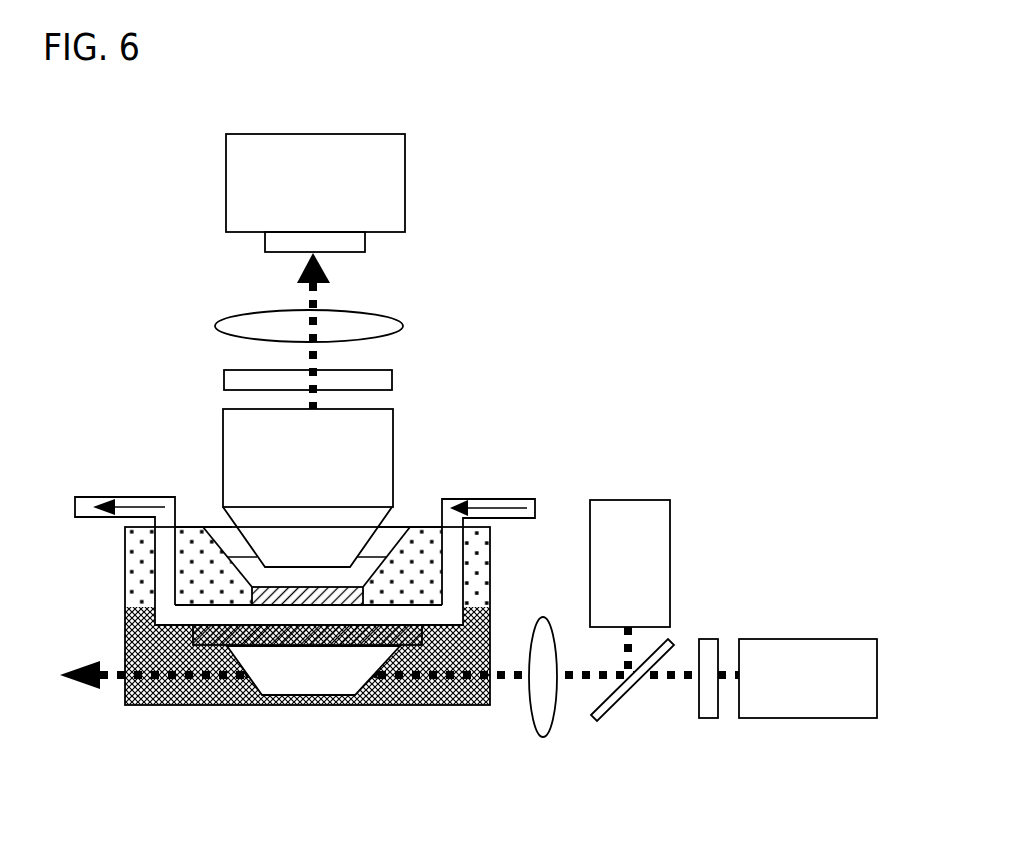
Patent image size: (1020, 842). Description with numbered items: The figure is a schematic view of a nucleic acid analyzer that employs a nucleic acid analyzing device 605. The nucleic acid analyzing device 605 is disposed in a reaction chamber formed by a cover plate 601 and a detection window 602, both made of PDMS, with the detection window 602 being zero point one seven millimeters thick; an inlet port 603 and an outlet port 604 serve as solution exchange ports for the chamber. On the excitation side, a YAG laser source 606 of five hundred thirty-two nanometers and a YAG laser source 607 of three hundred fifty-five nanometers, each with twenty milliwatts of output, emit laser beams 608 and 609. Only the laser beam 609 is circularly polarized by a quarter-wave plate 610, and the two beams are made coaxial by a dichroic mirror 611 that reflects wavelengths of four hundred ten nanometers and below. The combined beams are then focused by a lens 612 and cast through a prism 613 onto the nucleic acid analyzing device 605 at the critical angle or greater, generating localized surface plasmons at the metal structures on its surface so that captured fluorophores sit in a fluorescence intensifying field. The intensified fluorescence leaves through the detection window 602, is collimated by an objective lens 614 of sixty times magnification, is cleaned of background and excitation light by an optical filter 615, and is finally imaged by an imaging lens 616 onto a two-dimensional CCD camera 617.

The cover plate 601 is at (473, 578).
The detection window 602 is at (268, 587).
The inlet port 603 is at (533, 508).
The outlet port 604 is at (87, 508).
The nucleic acid analyzing device 605 is at (193, 640).
The YAG laser source 606 is at (808, 678).
The YAG laser source 607 is at (630, 563).
The laser beam 608 is at (625, 652).
The laser beam 609 is at (663, 685).
The quarter-wave plate 610 is at (708, 647).
The dichroic mirror 611 is at (597, 718).
The lens 612 is at (540, 712).
The prism 613 is at (307, 678).
The objective lens 614 is at (308, 488).
The optical filter 615 is at (373, 382).
The imaging lens 616 is at (370, 322).
The two-dimensional CCD camera 617 is at (315, 193).